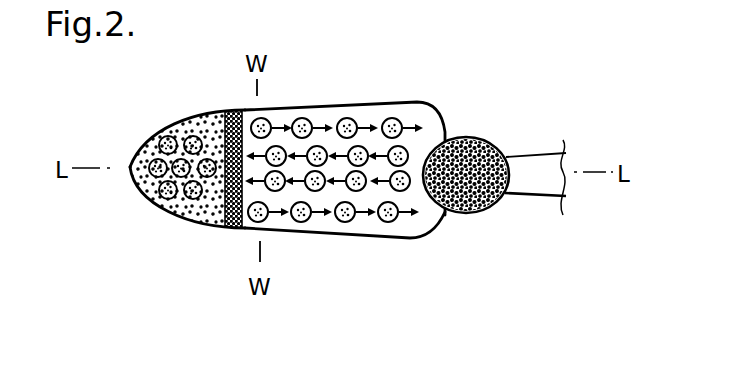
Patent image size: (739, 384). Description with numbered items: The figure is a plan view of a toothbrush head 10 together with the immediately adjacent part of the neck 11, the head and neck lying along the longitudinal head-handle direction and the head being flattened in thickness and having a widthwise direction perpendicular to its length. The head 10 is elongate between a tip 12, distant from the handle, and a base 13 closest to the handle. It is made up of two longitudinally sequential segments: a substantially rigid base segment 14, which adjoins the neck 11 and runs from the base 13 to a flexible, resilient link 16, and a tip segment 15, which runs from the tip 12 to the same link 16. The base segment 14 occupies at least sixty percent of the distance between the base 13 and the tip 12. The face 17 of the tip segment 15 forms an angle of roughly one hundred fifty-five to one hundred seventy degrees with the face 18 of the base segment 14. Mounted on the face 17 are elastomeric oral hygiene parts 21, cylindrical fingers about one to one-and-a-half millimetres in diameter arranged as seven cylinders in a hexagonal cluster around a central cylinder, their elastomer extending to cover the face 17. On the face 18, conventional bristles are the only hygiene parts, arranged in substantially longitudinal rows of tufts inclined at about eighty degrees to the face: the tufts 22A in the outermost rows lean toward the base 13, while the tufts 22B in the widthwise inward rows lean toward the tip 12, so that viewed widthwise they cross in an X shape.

The toothbrush head 10 is at (138, 226).
The neck 11 is at (535, 165).
The tip 12 is at (123, 177).
The base 13 is at (442, 215).
The base segment 14 is at (367, 240).
The tip segment 15 is at (170, 131).
The link 16 is at (230, 229).
The face of the tip segment 17 is at (198, 120).
The face of the base segment 18 is at (373, 112).
The elastomeric oral hygiene parts 21 is at (161, 136).
The tufts in outermost longitudinal rows 22A is at (344, 119).
The tufts in widthwise inward rows 22B is at (408, 149).